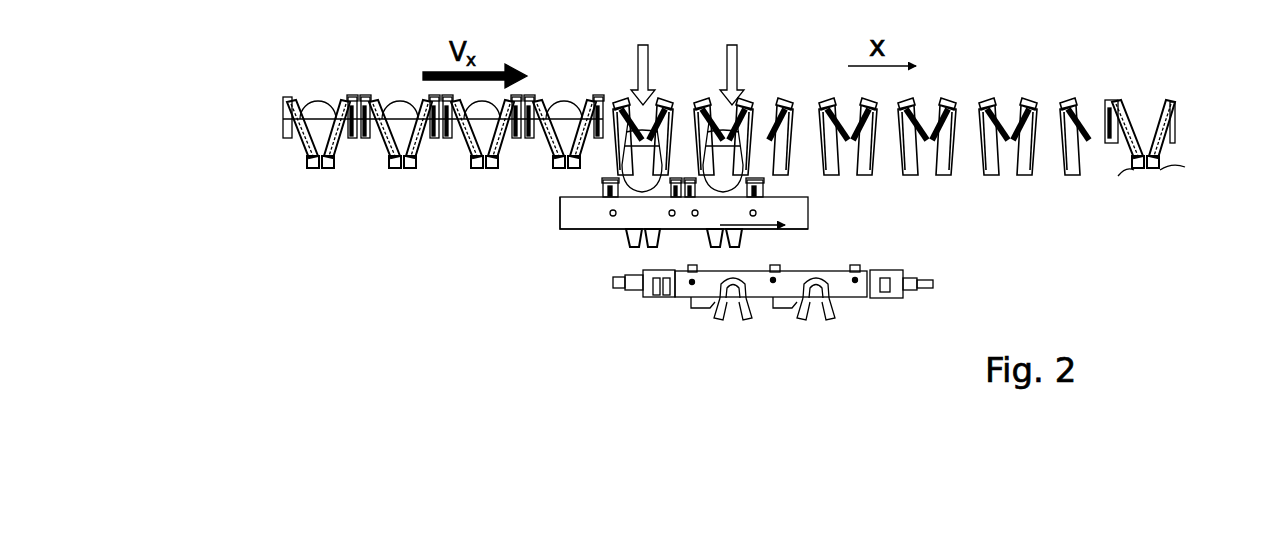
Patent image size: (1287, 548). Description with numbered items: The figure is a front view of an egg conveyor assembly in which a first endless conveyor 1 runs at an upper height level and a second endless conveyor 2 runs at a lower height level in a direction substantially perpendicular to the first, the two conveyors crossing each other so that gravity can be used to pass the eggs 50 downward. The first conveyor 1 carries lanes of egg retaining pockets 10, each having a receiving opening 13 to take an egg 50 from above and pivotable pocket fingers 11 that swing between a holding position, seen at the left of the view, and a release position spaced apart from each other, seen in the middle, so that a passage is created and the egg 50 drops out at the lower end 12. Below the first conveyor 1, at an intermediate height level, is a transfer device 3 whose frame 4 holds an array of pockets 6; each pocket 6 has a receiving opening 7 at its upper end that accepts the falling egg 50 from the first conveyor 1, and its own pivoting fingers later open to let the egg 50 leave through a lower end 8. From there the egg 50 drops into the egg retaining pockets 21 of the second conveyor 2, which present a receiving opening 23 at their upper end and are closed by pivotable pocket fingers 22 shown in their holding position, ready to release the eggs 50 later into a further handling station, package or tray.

The first endless conveyor 1 is at (1068, 86).
The second endless conveyor 2 is at (850, 318).
The transfer device 3 is at (550, 217).
The frame 4 is at (808, 221).
The egg retaining pocket 6 is at (650, 237).
The receiving opening 7 is at (603, 181).
The lower end 8 is at (640, 263).
The egg retaining pocket 10 is at (631, 108).
The pocket finger 11 is at (307, 168).
The lower end 12 is at (662, 182).
The receiving opening 13 is at (1146, 117).
The egg retaining pocket 21 is at (712, 320).
The pocket finger 22 is at (722, 320).
The receiving opening 23 is at (716, 270).
The egg 50 is at (312, 104).